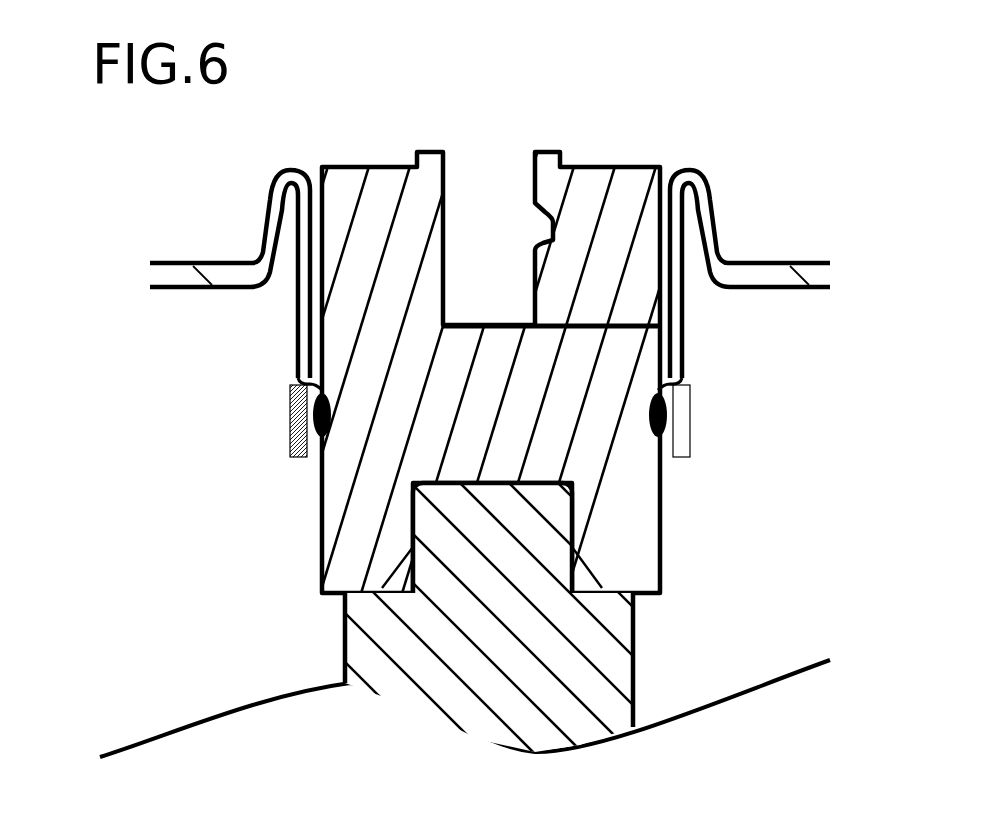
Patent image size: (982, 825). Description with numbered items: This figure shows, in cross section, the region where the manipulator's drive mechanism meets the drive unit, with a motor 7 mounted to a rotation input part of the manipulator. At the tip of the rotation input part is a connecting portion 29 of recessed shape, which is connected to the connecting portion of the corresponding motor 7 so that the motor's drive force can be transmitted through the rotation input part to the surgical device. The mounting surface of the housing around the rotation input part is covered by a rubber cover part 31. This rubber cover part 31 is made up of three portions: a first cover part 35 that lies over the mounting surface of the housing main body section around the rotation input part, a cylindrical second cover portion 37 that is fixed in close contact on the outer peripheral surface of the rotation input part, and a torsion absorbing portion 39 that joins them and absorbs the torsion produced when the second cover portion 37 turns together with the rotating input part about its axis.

The motor 7 is at (520, 550).
The connecting portion 29 is at (632, 533).
The rubber cover part 31 is at (433, 325).
The first cover part 35 is at (255, 283).
The second cover portion 37 is at (292, 452).
The torsion absorbing portion 39 is at (285, 279).